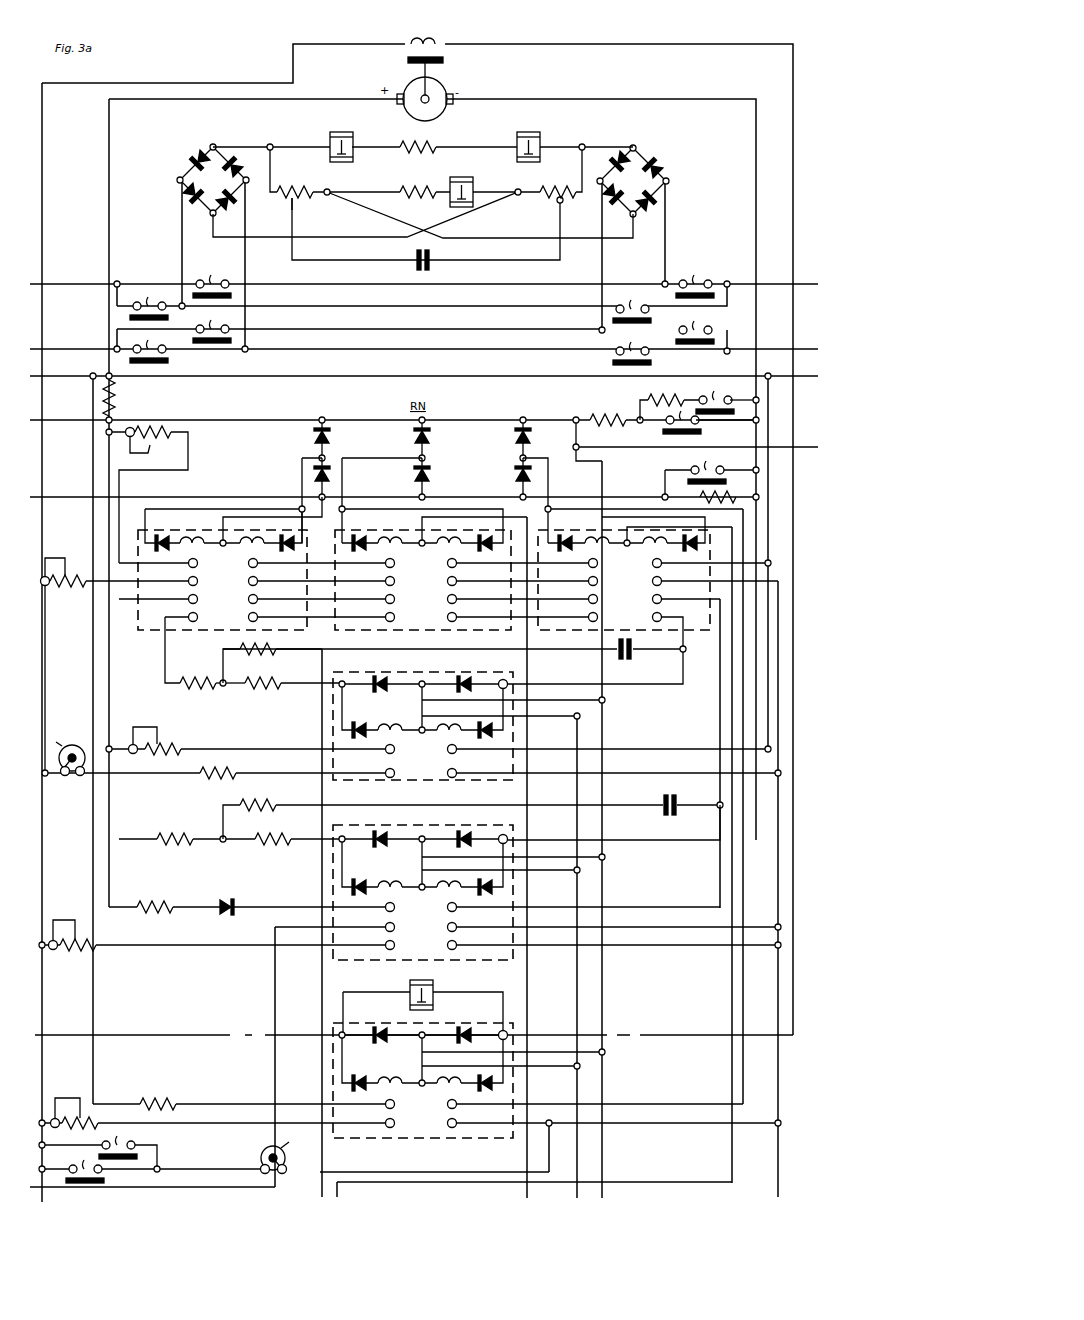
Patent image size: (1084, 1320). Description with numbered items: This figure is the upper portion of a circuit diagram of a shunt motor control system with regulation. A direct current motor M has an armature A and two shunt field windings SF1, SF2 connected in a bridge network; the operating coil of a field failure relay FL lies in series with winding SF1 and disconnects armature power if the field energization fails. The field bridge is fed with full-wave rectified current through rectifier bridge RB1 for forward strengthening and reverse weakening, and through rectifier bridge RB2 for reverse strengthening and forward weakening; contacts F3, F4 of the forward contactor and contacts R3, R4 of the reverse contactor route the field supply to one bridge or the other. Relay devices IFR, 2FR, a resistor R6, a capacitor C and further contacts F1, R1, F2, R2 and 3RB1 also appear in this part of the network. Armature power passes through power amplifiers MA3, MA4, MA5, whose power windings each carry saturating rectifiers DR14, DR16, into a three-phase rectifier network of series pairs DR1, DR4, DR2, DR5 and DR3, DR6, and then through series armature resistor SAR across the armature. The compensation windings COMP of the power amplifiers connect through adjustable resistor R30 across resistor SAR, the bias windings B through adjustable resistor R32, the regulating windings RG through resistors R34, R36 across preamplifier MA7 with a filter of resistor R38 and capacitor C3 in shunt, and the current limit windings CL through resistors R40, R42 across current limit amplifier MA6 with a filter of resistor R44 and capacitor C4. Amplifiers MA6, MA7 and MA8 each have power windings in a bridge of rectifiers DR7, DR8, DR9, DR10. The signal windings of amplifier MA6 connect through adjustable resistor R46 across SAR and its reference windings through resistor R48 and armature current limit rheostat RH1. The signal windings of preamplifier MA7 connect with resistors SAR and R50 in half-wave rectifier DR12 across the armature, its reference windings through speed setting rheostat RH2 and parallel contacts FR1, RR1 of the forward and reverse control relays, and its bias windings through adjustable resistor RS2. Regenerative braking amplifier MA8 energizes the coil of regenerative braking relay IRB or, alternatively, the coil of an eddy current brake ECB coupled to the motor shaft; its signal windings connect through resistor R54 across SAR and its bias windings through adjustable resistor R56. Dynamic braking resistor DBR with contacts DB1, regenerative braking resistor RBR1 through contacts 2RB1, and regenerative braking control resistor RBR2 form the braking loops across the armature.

The eddy current brake ECB is at (448, 56).
The direct current motor M is at (415, 99).
The armature A is at (400, 77).
The rectifier bridge RB1 is at (633, 182).
The rectifier bridge RB2 is at (213, 181).
The field failure relay FL is at (330, 140).
The shunt field winding SF1 is at (440, 135).
The shunt field winding SF2 is at (398, 182).
The field relay IFR is at (540, 140).
The field relay 2FR is at (473, 185).
The normally open contacts of reverse contactor R4 is at (295, 191).
The resistor R6 is at (558, 184).
The capacitor C is at (432, 252).
The normally open contacts of reverse contactor R3 is at (212, 282).
The normally open contacts of forward contactor F3 is at (149, 304).
The normally open contacts of forward contactor F4 is at (149, 347).
The relay contact F1 is at (695, 281).
The relay contact R1 is at (632, 306).
The relay contact F2 is at (695, 328).
The relay contact R2 is at (632, 348).
The series armature resistor SAR is at (120, 392).
The adjustable resistor R30 is at (147, 494).
The rectifier DR1 is at (312, 438).
The rectifier DR2 is at (412, 438).
The rectifier DR3 is at (513, 438).
The rectifier DR4 is at (318, 472).
The rectifier DR5 is at (418, 472).
The rectifier DR6 is at (519, 472).
The dynamic braking resistor DBR is at (608, 430).
The regenerative braking resistor RBR1 is at (659, 390).
The normally open contacts of regenerative braking contactor 2RB1 is at (727, 398).
The normally open contacts of dynamic braking contactor DB1 is at (700, 428).
The relay contact 3RB1 is at (710, 476).
The regenerative braking control resistor RBR2 is at (722, 506).
The power amplifier MA3 is at (230, 563).
The power amplifier MA4 is at (464, 568).
The power amplifier MA5 is at (598, 530).
The current limit amplifier MA6 is at (460, 672).
The preamplifier MA7 is at (450, 826).
The regenerative braking amplifier MA8 is at (450, 1022).
The saturating rectifier DR14 is at (165, 535).
The saturating rectifier DR16 is at (284, 553).
The IR drop compensation windings COMP is at (254, 563).
The bias windings B is at (238, 581).
The regulating windings RG is at (254, 599).
The current limit windings CL is at (277, 647).
The capacitor C4 is at (628, 662).
The resistor R40 is at (208, 675).
The resistor R42 is at (285, 675).
The resistor R44 is at (270, 662).
The rectifier DR7 is at (354, 723).
The rectifier DR8 is at (462, 694).
The rectifier DR9 is at (380, 692).
The rectifier DR10 is at (490, 716).
The adjustable resistor R32 is at (64, 664).
The adjustable resistor R46 is at (162, 738).
The resistor R48 is at (220, 760).
The armature current limit adjusting rheostat RH1 is at (68, 754).
The resistor R34 is at (187, 831).
The resistor R36 is at (298, 831).
The resistor R38 is at (471, 812).
The capacitor C3 is at (672, 818).
The resistor R50 is at (150, 890).
The half-wave rectifier DR12 is at (232, 896).
The adjustable resistor RS2 is at (67, 946).
The regenerative braking relay IRB is at (433, 985).
The resistor R54 is at (160, 1092).
The adjustable resistor R56 is at (92, 1112).
The normally open contacts of forward control relay FR1 is at (122, 1138).
The normally open contacts of reverse control relay RR1 is at (152, 1167).
The speed setting rheostat RH2 is at (260, 1160).